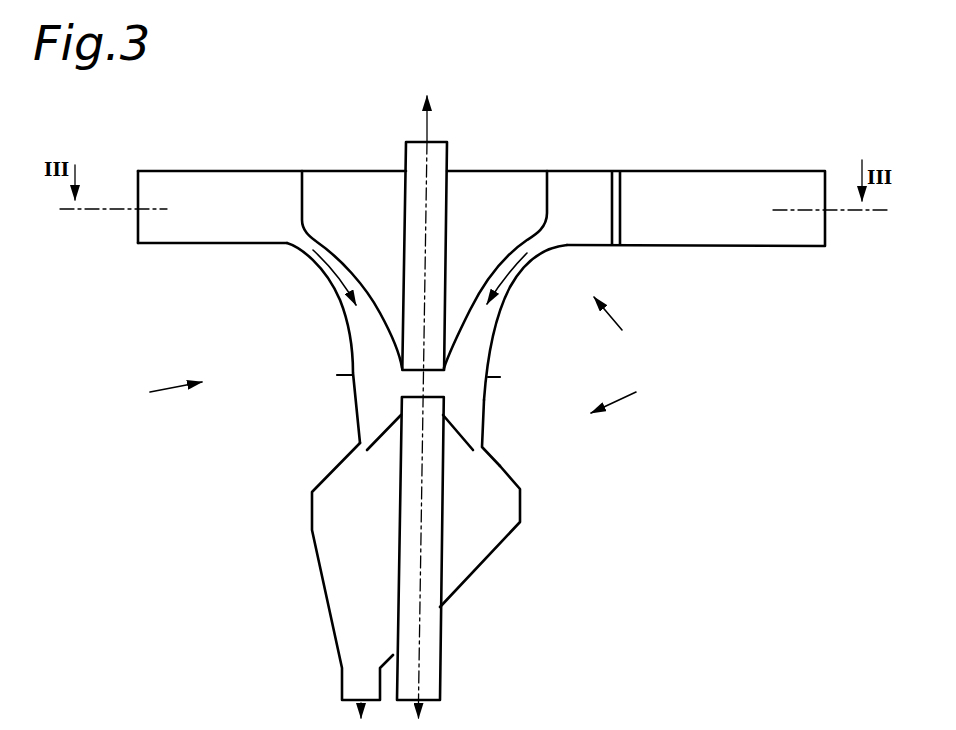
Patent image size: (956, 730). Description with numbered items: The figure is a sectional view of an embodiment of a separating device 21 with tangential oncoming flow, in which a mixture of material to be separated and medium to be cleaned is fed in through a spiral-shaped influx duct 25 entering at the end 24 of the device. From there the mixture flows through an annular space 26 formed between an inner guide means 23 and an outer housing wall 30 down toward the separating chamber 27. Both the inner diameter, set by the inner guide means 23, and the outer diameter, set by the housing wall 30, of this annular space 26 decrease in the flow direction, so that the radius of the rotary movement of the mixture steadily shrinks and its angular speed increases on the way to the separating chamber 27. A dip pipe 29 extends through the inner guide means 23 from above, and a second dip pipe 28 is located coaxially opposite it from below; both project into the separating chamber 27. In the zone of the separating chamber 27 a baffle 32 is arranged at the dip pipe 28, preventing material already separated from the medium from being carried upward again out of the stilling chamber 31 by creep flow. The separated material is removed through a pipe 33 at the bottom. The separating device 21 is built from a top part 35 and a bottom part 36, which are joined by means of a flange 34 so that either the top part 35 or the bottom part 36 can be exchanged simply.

The separating device 21 is at (152, 397).
The inner guide means 23 is at (489, 268).
The end of supply duct 24 is at (137, 236).
The supply duct 25 is at (222, 188).
The annular space 26 is at (352, 325).
The separating chamber 27 is at (365, 395).
The dip pipe 28 is at (427, 617).
The dip pipe 29 is at (413, 159).
The outer housing wall 30 is at (505, 318).
The stilling chamber 31 is at (478, 527).
The baffle 32 is at (461, 433).
The pipe 33 is at (367, 678).
The flange 34 is at (343, 373).
The top part 35 is at (621, 325).
The bottom part 36 is at (626, 396).